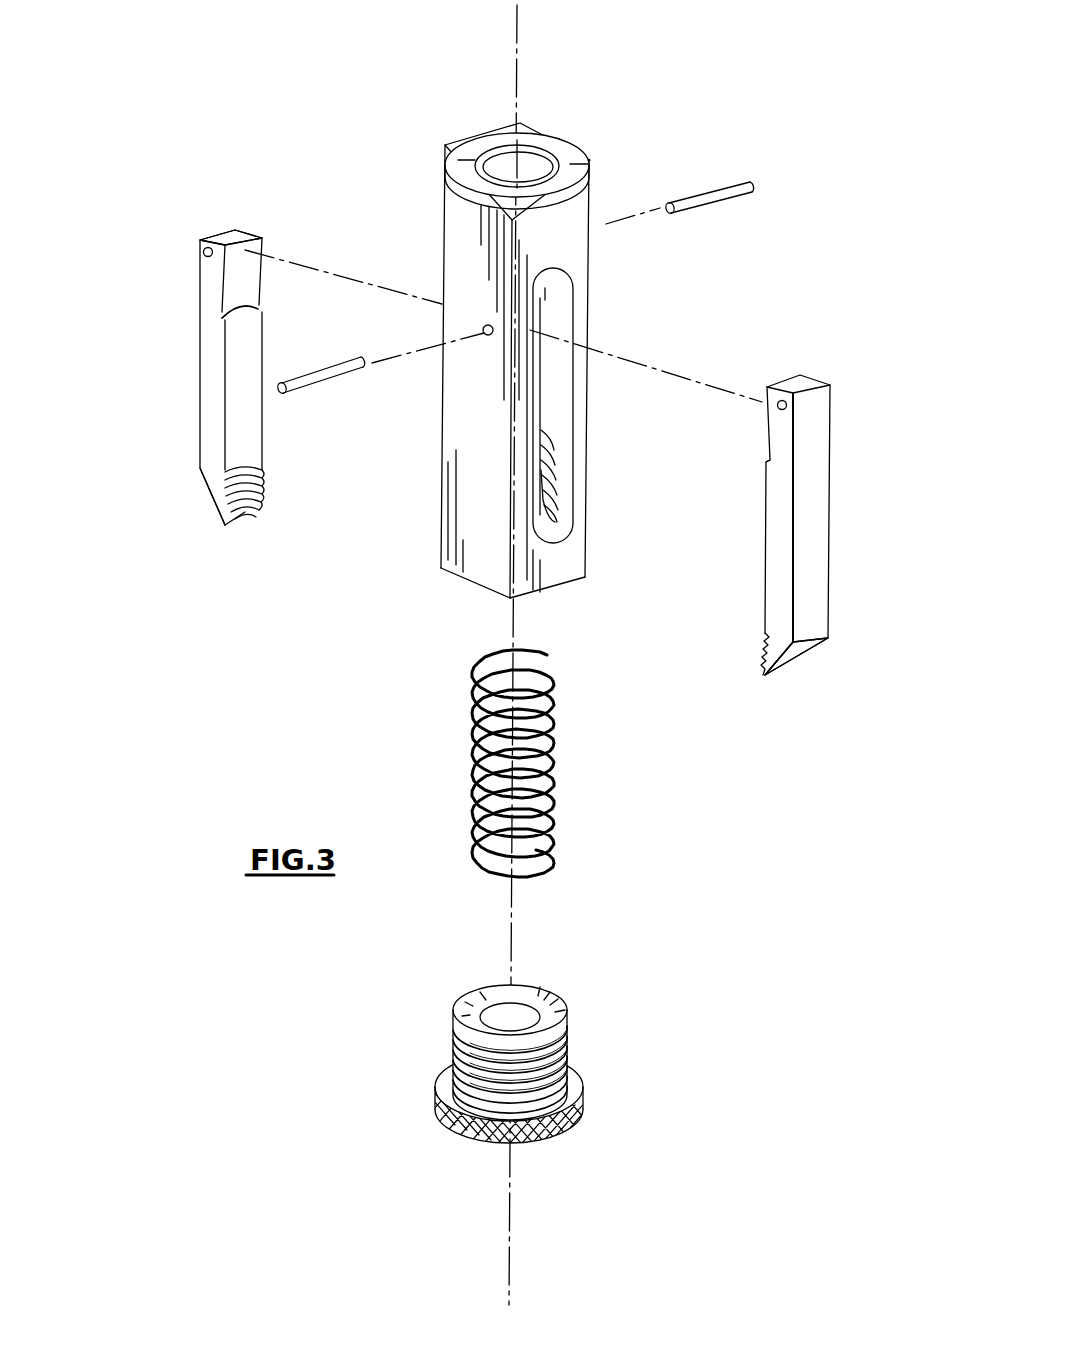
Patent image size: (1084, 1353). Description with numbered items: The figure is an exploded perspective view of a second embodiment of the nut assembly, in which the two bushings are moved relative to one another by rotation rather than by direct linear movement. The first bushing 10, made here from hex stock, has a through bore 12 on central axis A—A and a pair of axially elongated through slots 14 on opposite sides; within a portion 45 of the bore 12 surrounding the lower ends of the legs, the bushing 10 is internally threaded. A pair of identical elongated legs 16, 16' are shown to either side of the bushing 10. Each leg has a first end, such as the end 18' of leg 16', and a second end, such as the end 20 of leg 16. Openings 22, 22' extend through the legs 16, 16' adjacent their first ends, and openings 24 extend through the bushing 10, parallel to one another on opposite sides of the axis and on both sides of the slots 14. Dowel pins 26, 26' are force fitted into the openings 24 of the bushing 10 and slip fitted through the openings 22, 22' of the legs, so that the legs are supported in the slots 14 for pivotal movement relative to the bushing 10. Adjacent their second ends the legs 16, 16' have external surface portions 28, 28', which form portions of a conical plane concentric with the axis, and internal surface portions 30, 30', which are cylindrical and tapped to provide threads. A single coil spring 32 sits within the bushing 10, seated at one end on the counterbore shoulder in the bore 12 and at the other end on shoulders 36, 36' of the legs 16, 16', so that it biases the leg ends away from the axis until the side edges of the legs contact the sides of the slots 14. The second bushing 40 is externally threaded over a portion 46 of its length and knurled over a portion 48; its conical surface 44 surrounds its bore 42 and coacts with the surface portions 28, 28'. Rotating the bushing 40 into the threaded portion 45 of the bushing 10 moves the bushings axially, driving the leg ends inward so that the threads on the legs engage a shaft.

The bushing 10 is at (466, 575).
The through bore 12 is at (533, 160).
The through slot 14 is at (566, 420).
The leg 16 is at (825, 525).
The leg 16' is at (200, 377).
The first end of leg 18' is at (249, 221).
The second end of leg 20 is at (785, 676).
The opening 22 is at (742, 423).
The opening 22' is at (165, 243).
The opening 24 is at (482, 345).
The dowel pin 26 is at (320, 355).
The dowel pin 26' is at (716, 173).
The external surface portion 28 is at (810, 668).
The external surface portion 28' is at (171, 496).
The internal surface portion 30 is at (733, 640).
The internal surface portion 30' is at (267, 517).
The coil spring 32 is at (552, 797).
The shoulder 36 is at (739, 483).
The shoulder 36' is at (208, 315).
The second bushing 40 is at (438, 1047).
The bore 42 is at (497, 1000).
The conical surface 44 is at (540, 990).
The internally threaded portion 45 is at (553, 483).
The externally threaded portion 46 is at (563, 1058).
The knurled surface 48 is at (578, 1120).